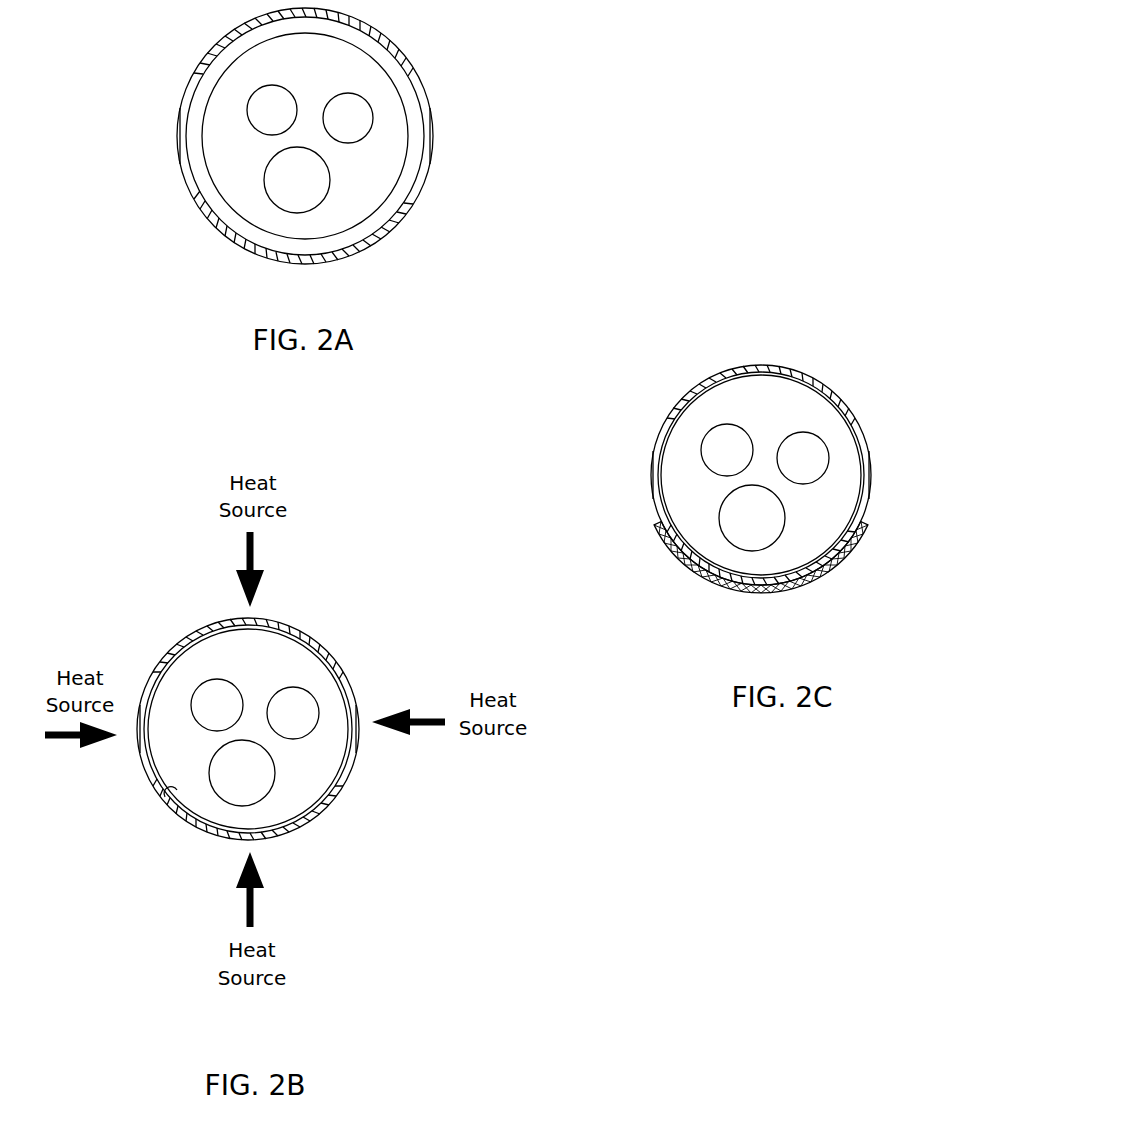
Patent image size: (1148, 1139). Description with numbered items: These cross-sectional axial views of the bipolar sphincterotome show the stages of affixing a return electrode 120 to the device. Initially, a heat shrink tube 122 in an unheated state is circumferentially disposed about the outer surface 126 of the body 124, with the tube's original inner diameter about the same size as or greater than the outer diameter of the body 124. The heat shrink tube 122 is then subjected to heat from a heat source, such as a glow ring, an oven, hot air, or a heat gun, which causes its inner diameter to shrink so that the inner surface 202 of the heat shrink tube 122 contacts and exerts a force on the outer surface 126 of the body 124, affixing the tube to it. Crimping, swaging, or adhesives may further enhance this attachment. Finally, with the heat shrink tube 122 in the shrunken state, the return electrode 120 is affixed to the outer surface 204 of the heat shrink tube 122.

In FIG. 2C, the return electrode 120 is at (806, 483).
In FIG. 2A, the heat shrink tube 122 is at (415, 68).
In FIG. 2B, the heat shrink tube 122 is at (323, 650).
In FIG. 2C, the heat shrink tube 122 is at (837, 397).
In FIG. 2A, the body 124 is at (387, 167).
In FIG. 2B, the body 124 is at (300, 805).
In FIG. 2C, the body 124 is at (840, 500).
In FIG. 2A, the outer surface 126 is at (408, 140).
In FIG. 2B, the outer surface 126 is at (347, 772).
In FIG. 2C, the outer surface 126 is at (867, 467).
In FIG. 2B, the inner surface 202 is at (173, 803).
In FIG. 2C, the outer surface 204 is at (708, 573).